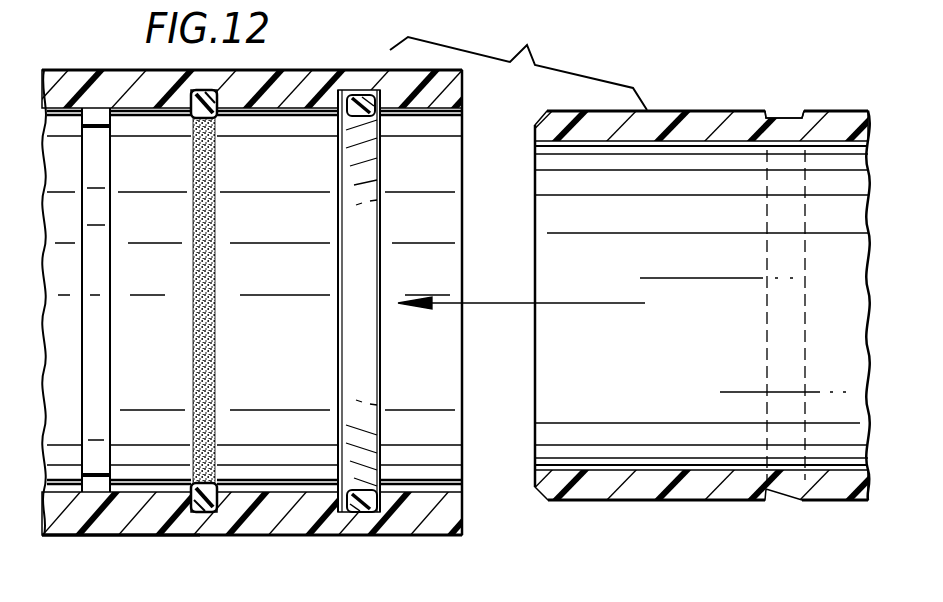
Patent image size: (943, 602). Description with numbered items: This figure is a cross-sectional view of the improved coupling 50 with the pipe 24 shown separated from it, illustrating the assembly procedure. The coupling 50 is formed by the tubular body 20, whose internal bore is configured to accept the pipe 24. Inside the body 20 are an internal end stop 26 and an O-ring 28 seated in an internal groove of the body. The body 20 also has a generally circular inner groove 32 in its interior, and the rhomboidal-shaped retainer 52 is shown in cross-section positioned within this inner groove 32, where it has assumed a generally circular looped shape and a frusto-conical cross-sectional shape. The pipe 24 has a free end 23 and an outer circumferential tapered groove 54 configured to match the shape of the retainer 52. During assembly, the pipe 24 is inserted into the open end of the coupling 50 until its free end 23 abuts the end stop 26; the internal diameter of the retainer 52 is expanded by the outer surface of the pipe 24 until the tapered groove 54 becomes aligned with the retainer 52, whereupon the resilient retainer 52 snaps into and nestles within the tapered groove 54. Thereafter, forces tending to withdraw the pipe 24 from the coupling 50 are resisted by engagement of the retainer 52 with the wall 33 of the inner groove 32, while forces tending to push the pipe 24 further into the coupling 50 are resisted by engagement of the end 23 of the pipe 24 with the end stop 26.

The tubular body 20 is at (318, 82).
The free end of pipe 23 is at (543, 500).
The pipe 24 is at (688, 125).
The end stop 26 is at (100, 125).
The O-ring 28 is at (204, 508).
The inner groove 32 is at (342, 512).
The wall of groove 33 is at (383, 512).
The coupling 50 is at (88, 541).
The retainer 52 is at (390, 146).
The tapered groove 54 is at (783, 117).